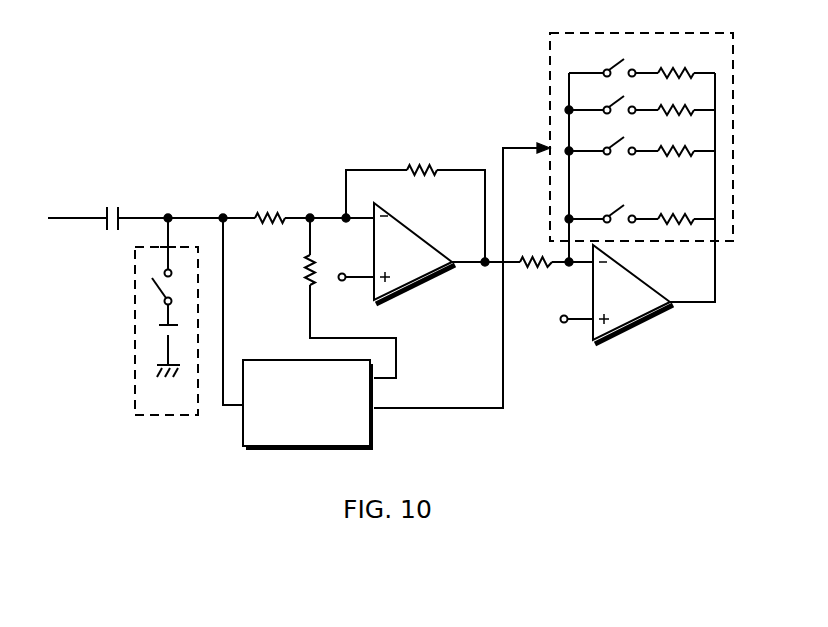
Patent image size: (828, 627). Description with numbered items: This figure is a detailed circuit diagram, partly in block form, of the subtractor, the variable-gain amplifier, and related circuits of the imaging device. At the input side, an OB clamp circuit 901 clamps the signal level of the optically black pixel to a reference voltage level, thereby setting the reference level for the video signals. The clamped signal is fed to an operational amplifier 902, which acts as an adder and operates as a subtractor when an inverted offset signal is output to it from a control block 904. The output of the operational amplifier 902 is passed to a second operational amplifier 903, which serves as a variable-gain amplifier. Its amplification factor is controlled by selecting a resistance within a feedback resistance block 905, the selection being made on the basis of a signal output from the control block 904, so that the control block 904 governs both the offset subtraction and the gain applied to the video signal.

The OB clamp circuit 901 is at (135, 247).
The operational amplifier 902 is at (408, 292).
The operational amplifier 903 is at (626, 332).
The control block 904 is at (270, 452).
The feedback resistance block 905 is at (550, 93).